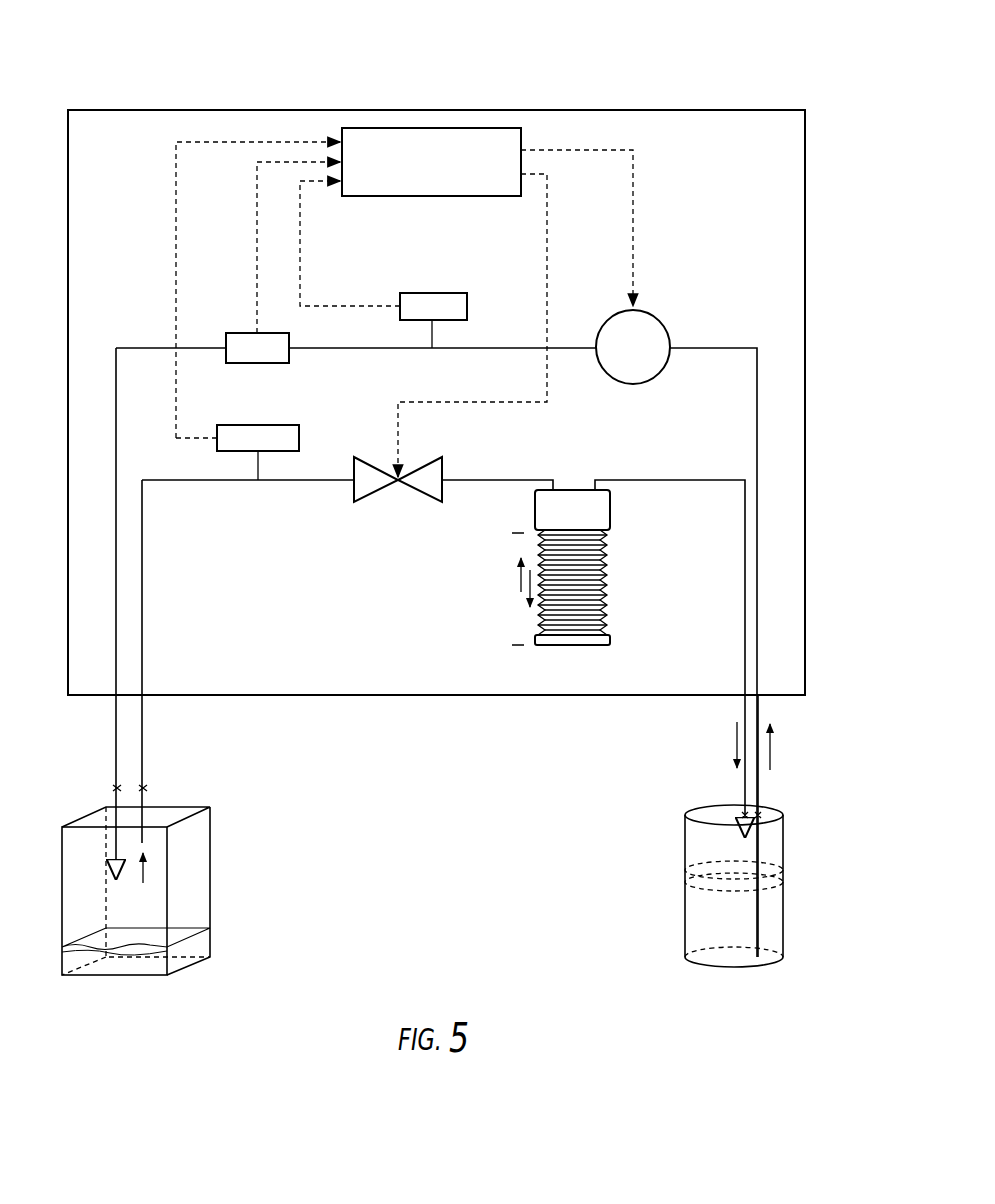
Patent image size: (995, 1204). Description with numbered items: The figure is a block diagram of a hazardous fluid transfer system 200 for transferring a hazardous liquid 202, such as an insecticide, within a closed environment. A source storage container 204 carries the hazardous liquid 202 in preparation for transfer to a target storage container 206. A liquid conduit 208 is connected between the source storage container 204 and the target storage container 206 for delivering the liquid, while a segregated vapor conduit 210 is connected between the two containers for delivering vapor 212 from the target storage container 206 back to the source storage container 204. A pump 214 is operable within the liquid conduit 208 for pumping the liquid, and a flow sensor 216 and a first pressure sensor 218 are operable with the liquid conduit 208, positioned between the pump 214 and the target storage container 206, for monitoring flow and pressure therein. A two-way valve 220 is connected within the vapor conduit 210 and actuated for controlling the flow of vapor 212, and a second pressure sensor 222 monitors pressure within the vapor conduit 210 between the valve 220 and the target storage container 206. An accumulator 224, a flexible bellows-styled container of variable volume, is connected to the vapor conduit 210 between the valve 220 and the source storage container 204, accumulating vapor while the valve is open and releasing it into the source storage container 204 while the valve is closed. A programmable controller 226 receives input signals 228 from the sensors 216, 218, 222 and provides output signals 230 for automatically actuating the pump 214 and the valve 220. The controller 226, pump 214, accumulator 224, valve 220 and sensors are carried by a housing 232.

The hazardous fluid transfer system 200 is at (606, 88).
The hazardous liquid 202 is at (180, 935).
The source storage container 204 is at (774, 802).
The target storage container 206 is at (222, 812).
The liquid conduit 208 is at (757, 405).
The vapor conduit 210 is at (636, 480).
The vapor 212 is at (143, 872).
The pump 214 is at (655, 320).
The flow sensor 216 is at (230, 363).
The first pressure sensor 218 is at (492, 272).
The two-way valve 220 is at (370, 488).
The second pressure sensor 222 is at (275, 425).
The accumulator 224 is at (603, 517).
The programmable controller 226 is at (429, 130).
The input signals 228 is at (308, 137).
The output signals 230 is at (583, 150).
The housing 232 is at (803, 200).